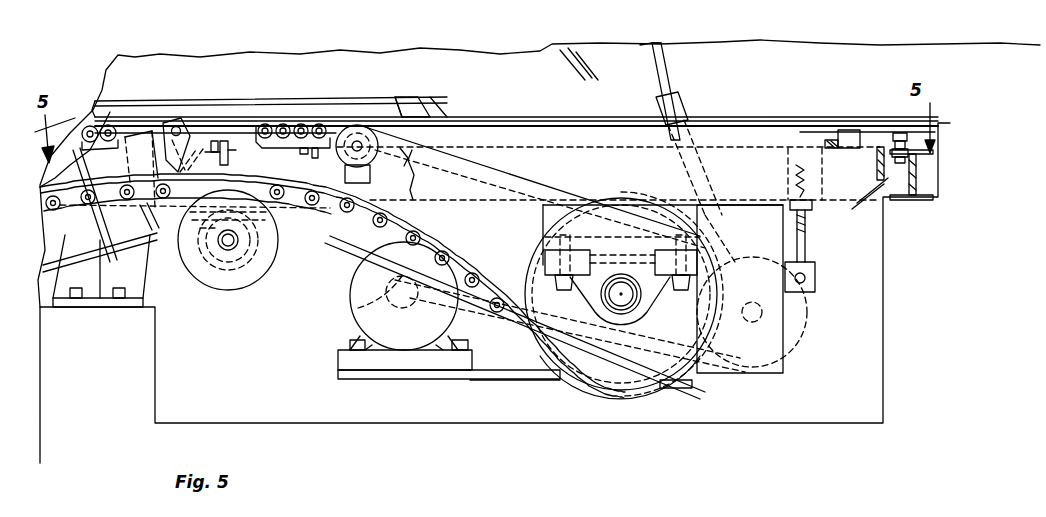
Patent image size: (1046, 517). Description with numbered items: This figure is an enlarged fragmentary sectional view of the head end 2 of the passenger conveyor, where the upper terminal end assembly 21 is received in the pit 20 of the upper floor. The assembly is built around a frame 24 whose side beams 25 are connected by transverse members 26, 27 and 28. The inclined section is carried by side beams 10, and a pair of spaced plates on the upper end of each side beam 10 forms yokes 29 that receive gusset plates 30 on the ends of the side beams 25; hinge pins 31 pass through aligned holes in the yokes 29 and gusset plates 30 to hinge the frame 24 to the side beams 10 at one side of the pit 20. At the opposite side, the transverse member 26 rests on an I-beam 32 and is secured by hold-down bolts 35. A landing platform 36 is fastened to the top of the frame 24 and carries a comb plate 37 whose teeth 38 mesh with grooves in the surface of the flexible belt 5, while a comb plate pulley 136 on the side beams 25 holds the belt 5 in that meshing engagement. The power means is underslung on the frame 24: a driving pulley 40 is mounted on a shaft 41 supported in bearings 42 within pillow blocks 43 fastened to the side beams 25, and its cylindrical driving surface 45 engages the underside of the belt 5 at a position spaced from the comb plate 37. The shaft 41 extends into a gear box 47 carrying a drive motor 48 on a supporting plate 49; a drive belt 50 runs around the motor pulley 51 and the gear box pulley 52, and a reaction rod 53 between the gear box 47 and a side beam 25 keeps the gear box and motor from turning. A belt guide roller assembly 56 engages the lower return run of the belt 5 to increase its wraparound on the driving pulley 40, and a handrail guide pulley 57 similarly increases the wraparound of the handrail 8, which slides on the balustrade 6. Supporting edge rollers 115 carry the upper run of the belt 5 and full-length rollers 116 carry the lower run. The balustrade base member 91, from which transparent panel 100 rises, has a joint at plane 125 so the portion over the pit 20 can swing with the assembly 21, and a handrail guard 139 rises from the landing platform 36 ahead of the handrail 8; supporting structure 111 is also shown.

The head end 2 is at (842, 432).
The flexible belt 5 is at (250, 120).
The balustrade 6 is at (482, 60).
The handrail 8 is at (665, 62).
The side beam 10 is at (50, 258).
The pit 20 is at (878, 358).
The upper terminal end assembly 21 is at (692, 76).
The frame 24 is at (858, 133).
The side beams 25 is at (630, 163).
The transverse member 26 is at (881, 204).
The transverse member 27 is at (298, 154).
The transverse member 28 is at (218, 146).
The yokes 29 is at (145, 135).
The gusset plates 30 is at (226, 143).
The hinge pins 31 is at (177, 126).
The I-beam 32 is at (918, 175).
The hold-down bolts 35 is at (893, 130).
The landing platform 36 is at (733, 120).
The comb plate 37 is at (385, 117).
The teeth 38 is at (358, 122).
The driving pulley 40 is at (663, 363).
The shaft 41 is at (619, 300).
The bearings 42 is at (600, 303).
The pillow blocks 43 is at (663, 303).
The cylindrical driving surface 45 is at (573, 382).
The gear box 47 is at (767, 343).
The drive motor 48 is at (352, 297).
The supporting plate 49 is at (452, 381).
The drive belt 50 is at (518, 335).
The pulley 51 is at (386, 300).
The pulley 52 is at (803, 322).
The reaction rod 53 is at (808, 238).
The belt guide roller assembly 56 is at (333, 240).
The handrail guide pulley 57 is at (233, 282).
The base member 91 is at (107, 100).
The transparent panel 100 is at (638, 50).
The support frame 111 is at (143, 267).
The supporting edge rollers 115 is at (277, 130).
The supporting full-length rollers 116 is at (56, 209).
The plane 125 is at (189, 118).
The comb plate pulley 136 is at (408, 162).
The handrail guard 139 is at (680, 107).